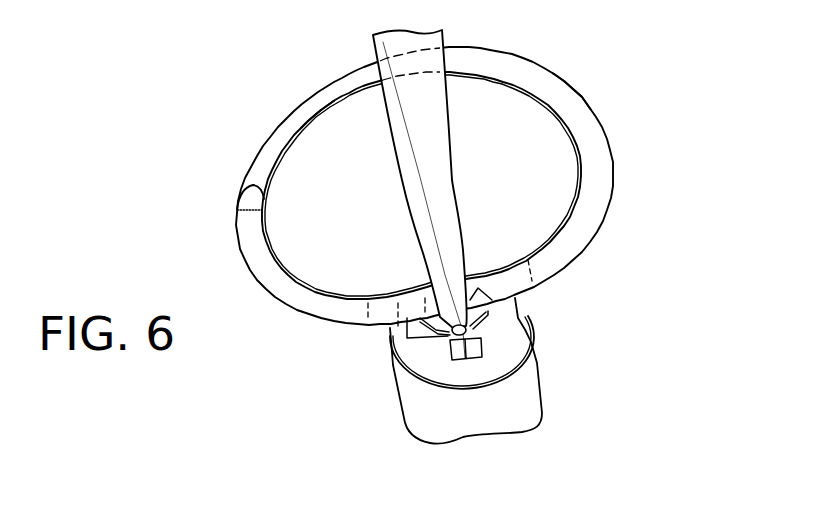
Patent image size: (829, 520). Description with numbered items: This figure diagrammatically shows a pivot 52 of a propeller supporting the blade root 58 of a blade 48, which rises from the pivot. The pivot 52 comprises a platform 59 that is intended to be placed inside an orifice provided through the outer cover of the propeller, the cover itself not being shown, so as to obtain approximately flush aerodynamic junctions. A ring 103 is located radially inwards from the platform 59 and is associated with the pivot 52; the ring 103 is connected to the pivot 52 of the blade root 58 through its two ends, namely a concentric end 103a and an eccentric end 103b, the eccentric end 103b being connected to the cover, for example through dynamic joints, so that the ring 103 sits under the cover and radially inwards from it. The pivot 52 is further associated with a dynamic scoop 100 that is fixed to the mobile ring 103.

The blade 48 is at (427, 42).
The pivot 52 is at (398, 343).
The blade root 58 is at (492, 331).
The platform 59 is at (550, 213).
The dynamic scoop 100 is at (250, 203).
The ring 103 is at (588, 133).
The concentric end 103a is at (315, 122).
The eccentric end 103b is at (570, 87).